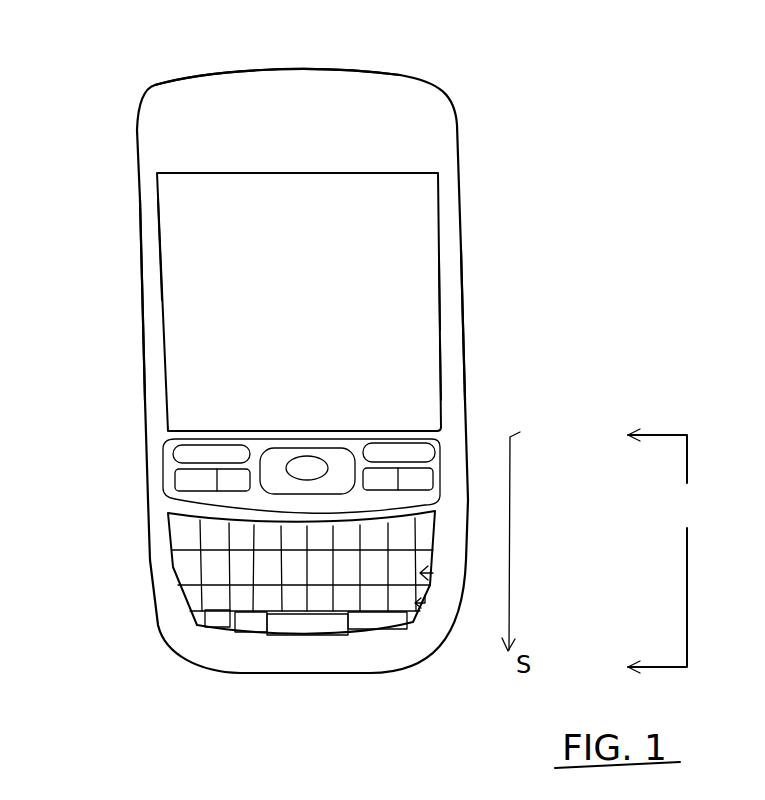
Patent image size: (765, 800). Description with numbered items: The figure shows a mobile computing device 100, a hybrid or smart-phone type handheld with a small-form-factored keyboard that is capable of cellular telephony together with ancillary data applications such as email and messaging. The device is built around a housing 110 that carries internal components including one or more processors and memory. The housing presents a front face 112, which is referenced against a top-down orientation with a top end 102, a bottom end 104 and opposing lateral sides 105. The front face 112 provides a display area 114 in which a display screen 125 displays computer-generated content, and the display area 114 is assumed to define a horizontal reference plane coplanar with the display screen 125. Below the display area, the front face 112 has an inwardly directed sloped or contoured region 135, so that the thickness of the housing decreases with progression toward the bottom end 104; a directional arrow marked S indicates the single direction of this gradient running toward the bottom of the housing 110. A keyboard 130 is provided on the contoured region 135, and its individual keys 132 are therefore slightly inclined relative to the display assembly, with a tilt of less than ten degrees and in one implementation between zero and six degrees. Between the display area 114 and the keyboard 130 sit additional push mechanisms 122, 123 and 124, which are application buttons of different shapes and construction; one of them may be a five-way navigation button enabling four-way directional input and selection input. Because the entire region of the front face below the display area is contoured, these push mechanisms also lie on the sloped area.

The mobile computing device 100 is at (518, 160).
The top end 102 is at (282, 64).
The bottom end 104 is at (303, 676).
The lateral sides 105 is at (140, 238).
The housing 110 is at (448, 311).
The front face 112 is at (446, 369).
The display area 114 is at (258, 366).
The push mechanisms 122 is at (195, 482).
The push mechanisms 123 is at (186, 457).
The push mechanism 124 is at (270, 458).
The display screen 125 is at (197, 288).
The keyboard 130 is at (193, 575).
The individual keys 132 is at (178, 521).
The contoured region 135 is at (664, 551).